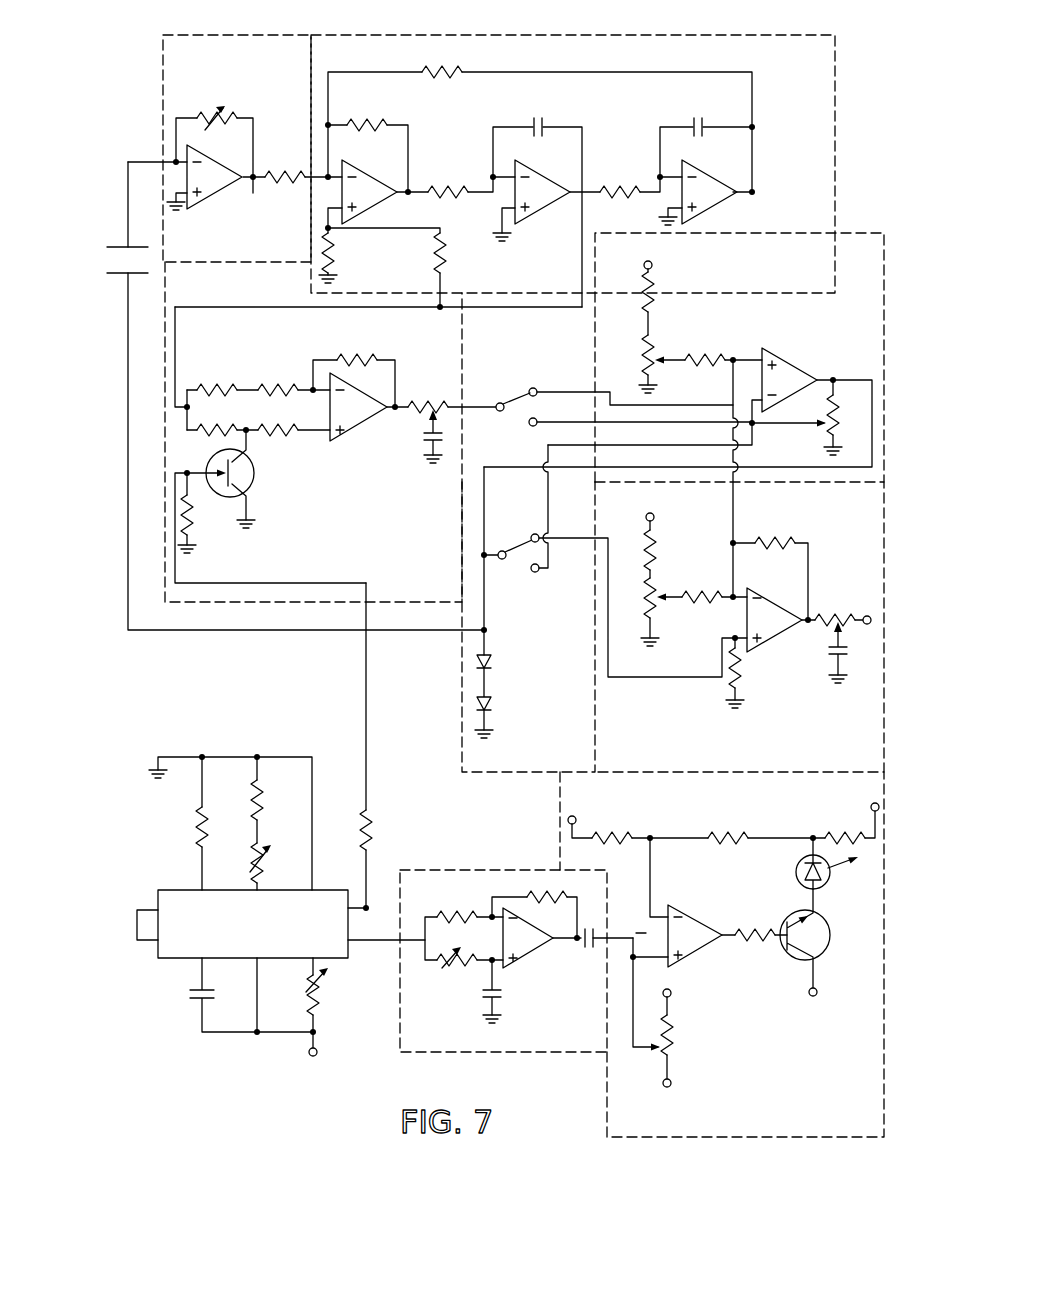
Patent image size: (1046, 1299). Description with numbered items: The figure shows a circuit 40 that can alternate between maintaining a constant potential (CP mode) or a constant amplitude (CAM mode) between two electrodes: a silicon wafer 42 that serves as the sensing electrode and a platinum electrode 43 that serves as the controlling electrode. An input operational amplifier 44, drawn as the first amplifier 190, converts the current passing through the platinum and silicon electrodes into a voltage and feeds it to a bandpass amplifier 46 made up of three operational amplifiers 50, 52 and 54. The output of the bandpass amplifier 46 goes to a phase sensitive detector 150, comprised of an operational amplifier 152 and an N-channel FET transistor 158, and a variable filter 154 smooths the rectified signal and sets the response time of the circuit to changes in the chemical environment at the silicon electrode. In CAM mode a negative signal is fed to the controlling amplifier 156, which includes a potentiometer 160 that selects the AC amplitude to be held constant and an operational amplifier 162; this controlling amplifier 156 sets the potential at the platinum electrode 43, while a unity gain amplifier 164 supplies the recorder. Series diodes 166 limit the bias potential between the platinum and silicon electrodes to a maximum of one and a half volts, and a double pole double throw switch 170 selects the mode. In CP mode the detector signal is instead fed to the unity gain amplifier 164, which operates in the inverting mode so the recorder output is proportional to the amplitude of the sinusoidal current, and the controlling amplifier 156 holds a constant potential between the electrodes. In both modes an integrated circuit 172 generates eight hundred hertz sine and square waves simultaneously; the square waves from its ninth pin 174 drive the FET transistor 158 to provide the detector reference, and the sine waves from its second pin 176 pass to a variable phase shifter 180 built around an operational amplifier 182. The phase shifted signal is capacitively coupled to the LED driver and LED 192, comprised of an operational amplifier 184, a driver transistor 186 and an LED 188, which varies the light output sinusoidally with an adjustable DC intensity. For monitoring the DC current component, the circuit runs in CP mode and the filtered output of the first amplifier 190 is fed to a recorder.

The circuit 40 is at (845, 104).
The silicon wafer 42 is at (132, 247).
The platinum electrode 43 is at (137, 273).
The operational amplifier 44 is at (262, 43).
The bandpass amplifier 46 is at (793, 40).
The operational amplifier 50 is at (363, 168).
The operational amplifier 52 is at (544, 176).
The operational amplifier 54 is at (705, 170).
The phase sensitive detector 150 is at (165, 330).
The operational amplifier 152 is at (348, 387).
The variable filter 154 is at (425, 440).
The controlling amplifier 156 is at (842, 255).
The transistor Q2 158 is at (257, 468).
The potentiometer 160 is at (652, 335).
The operational amplifier 162 is at (783, 367).
The unity gain amplifier 164 is at (862, 755).
The series diodes 166 is at (462, 743).
The double pole double throw switch 170 is at (530, 387).
The integrated circuit IC1 172 is at (178, 888).
The pin 9 174 is at (337, 897).
The pin 2 176 is at (343, 950).
The variable phase shifter 180 is at (507, 870).
The operational amplifier 182 is at (527, 955).
The operational amplifier 184 is at (693, 913).
The transistor Q1 186 is at (837, 910).
The LED 188 is at (797, 865).
The operational amplifier A1 190 is at (203, 146).
The LED driver and LED 192 is at (808, 1138).